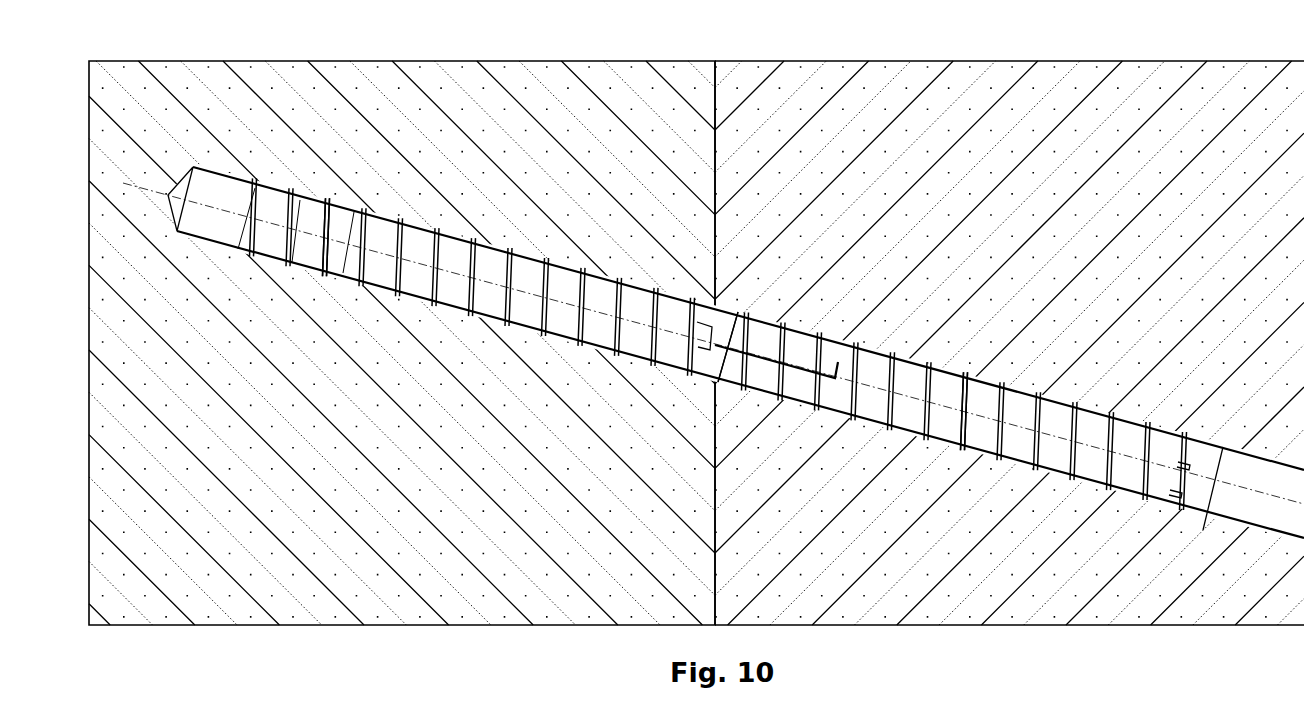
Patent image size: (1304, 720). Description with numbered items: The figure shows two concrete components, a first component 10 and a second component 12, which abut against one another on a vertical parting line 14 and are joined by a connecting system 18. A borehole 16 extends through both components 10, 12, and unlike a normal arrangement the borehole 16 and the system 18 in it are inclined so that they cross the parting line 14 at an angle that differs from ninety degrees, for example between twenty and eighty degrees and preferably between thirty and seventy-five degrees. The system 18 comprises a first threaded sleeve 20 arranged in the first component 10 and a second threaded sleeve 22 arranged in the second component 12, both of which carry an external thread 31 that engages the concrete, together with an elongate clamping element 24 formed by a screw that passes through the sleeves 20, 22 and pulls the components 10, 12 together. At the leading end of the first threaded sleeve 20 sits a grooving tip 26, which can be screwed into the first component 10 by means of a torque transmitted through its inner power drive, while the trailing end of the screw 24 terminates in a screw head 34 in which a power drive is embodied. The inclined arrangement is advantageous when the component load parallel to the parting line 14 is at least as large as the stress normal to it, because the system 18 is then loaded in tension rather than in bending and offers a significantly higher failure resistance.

The first component 10 is at (316, 559).
The second component 12 is at (952, 562).
The parting line 14 is at (716, 108).
The borehole 16 is at (205, 220).
The system 18 is at (921, 292).
The first threaded sleeve 20 is at (448, 243).
The second threaded sleeve 22 is at (1083, 463).
The clamping element 24 is at (703, 350).
The grooving tip 26 is at (277, 180).
The external thread 31 is at (332, 198).
The screw head 34 is at (1195, 490).